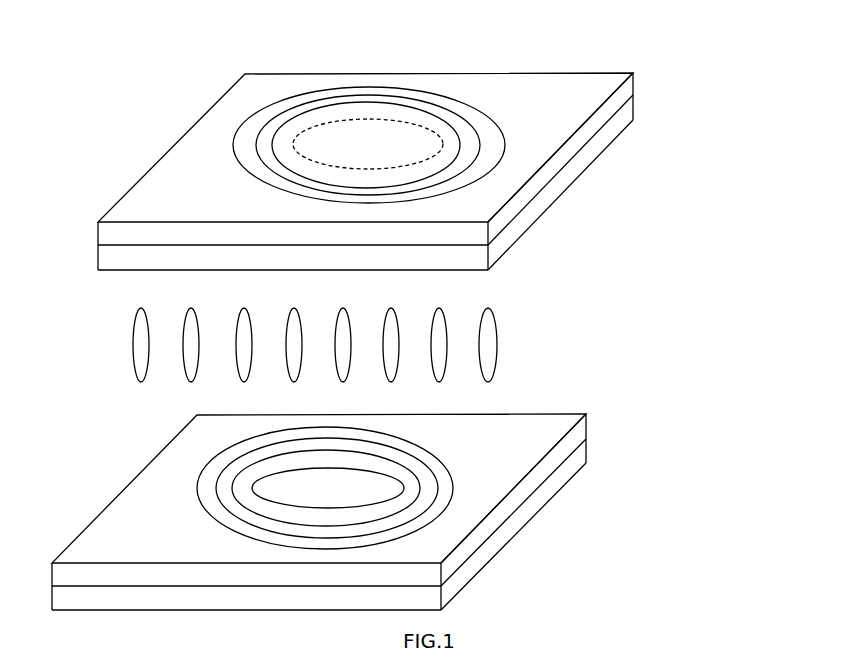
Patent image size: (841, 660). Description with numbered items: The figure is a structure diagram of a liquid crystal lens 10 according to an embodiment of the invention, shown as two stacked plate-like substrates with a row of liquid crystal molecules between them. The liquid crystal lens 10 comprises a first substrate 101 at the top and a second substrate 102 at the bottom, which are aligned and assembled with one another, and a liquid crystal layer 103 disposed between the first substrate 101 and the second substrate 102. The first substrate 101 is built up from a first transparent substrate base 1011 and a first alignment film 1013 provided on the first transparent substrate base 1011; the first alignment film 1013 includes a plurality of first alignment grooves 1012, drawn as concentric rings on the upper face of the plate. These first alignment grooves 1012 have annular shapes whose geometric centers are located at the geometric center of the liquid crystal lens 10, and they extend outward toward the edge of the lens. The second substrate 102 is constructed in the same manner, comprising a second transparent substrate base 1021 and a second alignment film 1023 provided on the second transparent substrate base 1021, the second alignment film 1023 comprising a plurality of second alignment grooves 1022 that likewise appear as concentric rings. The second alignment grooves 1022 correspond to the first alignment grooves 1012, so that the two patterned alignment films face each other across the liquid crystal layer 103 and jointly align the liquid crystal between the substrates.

The liquid crystal lens 10 is at (353, 33).
The first substrate 101 is at (440, 171).
The first transparent substrate base 1011 is at (610, 108).
The first alignment grooves 1012 is at (507, 158).
The first alignment film 1013 is at (547, 198).
The second substrate 102 is at (417, 512).
The second transparent substrate base 1021 is at (490, 547).
The second alignment grooves 1022 is at (437, 498).
The second alignment film 1023 is at (562, 450).
The liquid crystal layer 103 is at (497, 340).